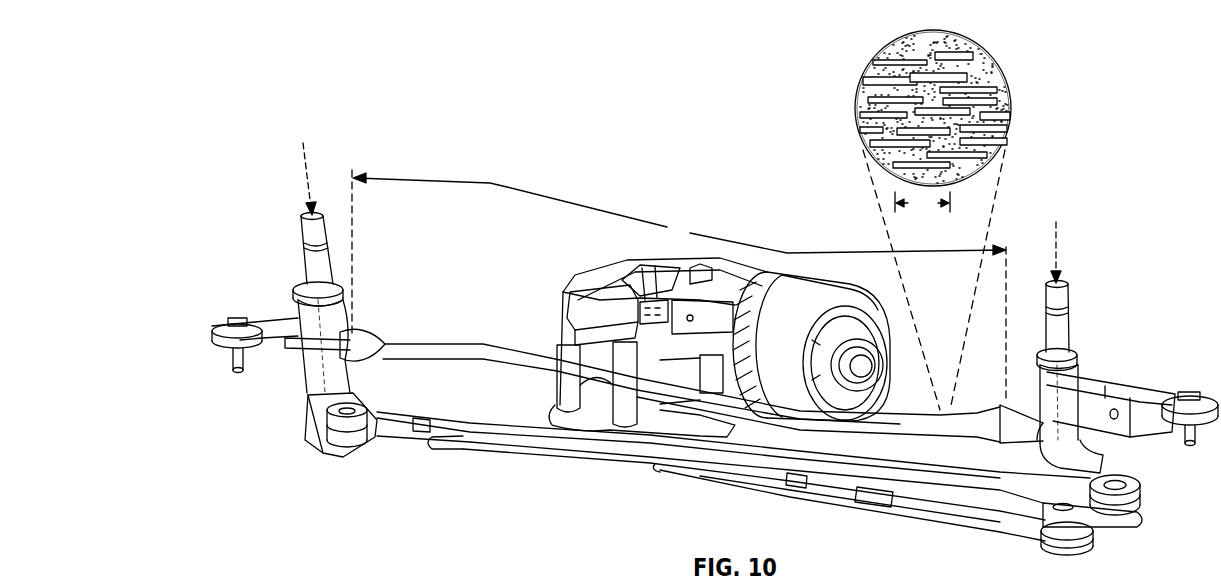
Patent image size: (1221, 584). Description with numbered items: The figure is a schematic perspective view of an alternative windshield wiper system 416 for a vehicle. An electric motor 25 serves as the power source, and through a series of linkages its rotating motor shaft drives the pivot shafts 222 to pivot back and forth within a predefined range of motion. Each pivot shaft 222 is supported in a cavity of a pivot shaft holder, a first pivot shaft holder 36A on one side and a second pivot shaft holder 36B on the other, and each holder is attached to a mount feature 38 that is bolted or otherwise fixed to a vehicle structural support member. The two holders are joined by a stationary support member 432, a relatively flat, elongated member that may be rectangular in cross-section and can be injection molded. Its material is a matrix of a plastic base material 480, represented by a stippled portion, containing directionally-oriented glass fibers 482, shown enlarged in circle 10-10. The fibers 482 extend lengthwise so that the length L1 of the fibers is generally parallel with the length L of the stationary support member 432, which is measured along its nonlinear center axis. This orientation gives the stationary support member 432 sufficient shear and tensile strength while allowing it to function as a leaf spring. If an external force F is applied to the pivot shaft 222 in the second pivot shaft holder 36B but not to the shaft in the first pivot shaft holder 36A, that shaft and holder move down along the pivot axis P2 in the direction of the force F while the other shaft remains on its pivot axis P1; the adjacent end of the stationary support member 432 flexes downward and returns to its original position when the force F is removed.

The windshield wiper system 416 is at (397, 67).
The electric motor 25 is at (835, 302).
The pivot shaft 222 is at (300, 260).
The first pivot shaft holder 36A is at (290, 322).
The second pivot shaft holder 36B is at (1103, 382).
The mount feature 38 is at (207, 338).
The stationary support member 432 is at (473, 343).
The plastic base material 480 is at (1010, 107).
The glass fibers 482 is at (895, 58).
The circle 10-10 is at (1005, 72).
The length of the stationary support member L is at (679, 285).
The length of the fibers L1 is at (922, 204).
The pivot axis P1 is at (303, 140).
The pivot axis P2 is at (1060, 237).
The external force F is at (306, 196).